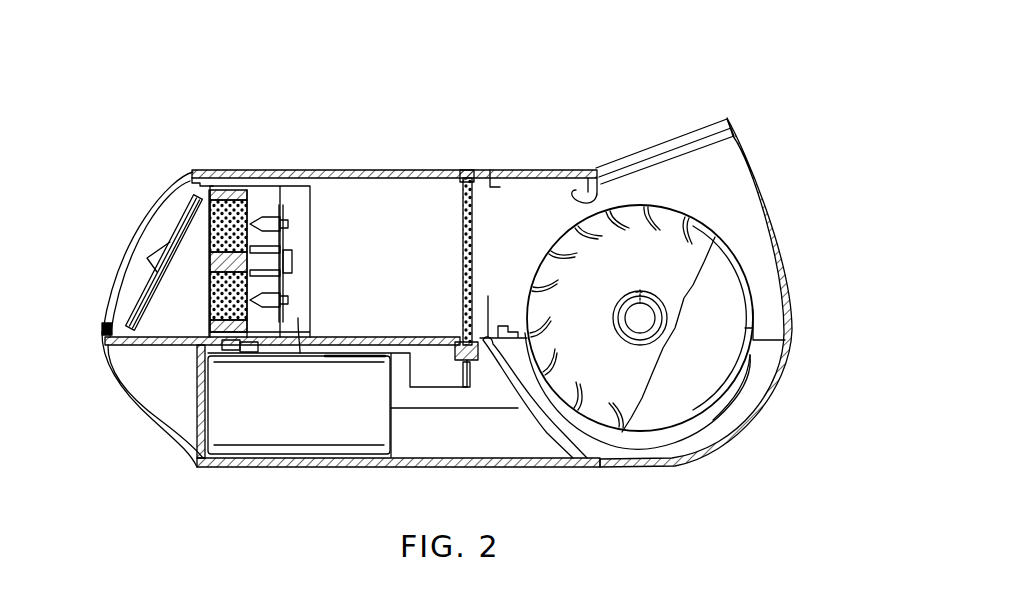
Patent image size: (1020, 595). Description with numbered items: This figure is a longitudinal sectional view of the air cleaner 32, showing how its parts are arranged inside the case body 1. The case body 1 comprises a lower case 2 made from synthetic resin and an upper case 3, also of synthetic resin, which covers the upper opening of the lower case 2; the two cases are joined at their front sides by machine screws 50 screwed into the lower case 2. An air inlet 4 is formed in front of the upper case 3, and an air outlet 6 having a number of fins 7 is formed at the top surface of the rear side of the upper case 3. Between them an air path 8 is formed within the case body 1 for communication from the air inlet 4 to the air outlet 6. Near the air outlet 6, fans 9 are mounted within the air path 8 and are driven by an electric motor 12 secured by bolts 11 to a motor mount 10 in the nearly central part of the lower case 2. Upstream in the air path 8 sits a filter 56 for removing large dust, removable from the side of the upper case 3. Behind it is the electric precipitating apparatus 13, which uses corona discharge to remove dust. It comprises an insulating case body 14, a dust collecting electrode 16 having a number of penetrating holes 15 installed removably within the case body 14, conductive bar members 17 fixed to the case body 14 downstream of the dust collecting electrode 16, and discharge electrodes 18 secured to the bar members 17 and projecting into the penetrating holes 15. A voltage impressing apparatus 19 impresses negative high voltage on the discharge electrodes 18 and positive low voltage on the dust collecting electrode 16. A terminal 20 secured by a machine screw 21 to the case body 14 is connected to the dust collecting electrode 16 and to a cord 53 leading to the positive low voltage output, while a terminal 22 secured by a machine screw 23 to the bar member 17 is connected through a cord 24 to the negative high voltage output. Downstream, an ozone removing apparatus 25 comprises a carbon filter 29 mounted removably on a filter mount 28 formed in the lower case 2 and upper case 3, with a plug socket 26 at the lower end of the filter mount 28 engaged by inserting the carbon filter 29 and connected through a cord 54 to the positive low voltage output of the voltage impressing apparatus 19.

The case body 1 is at (762, 192).
The lower case 2 is at (155, 403).
The upper case 3 is at (346, 171).
The air inlet 4 is at (118, 268).
The air outlet 6 is at (647, 152).
The fins 7 is at (688, 140).
The air path 8 is at (400, 217).
The fans 9 is at (618, 213).
The motor mount 10 is at (737, 353).
The bolts 11 is at (508, 322).
The electric motor 12 is at (713, 405).
The electric precipitating apparatus 13 is at (207, 224).
The case body 14 is at (278, 185).
The penetrating holes 15 is at (230, 198).
The dust collecting electrode 16 is at (207, 273).
The bar members 17 is at (282, 222).
The discharge electrodes 18 is at (235, 222).
The voltage impressing apparatus 19 is at (290, 455).
The terminal 20 is at (233, 353).
The machine screw 21 is at (239, 352).
The terminal 22 is at (292, 250).
The machine screw 23 is at (292, 262).
The cord 24 is at (298, 318).
The ozone removing apparatus 25 is at (478, 212).
The plug socket 26 is at (457, 353).
The filter mount 28 is at (480, 367).
The carbon filter 29 is at (463, 250).
The air cleaner 32 is at (775, 78).
The machine screws 50 is at (104, 330).
The cord 53 is at (333, 356).
The cord 54 is at (453, 390).
The filter 56 is at (163, 256).